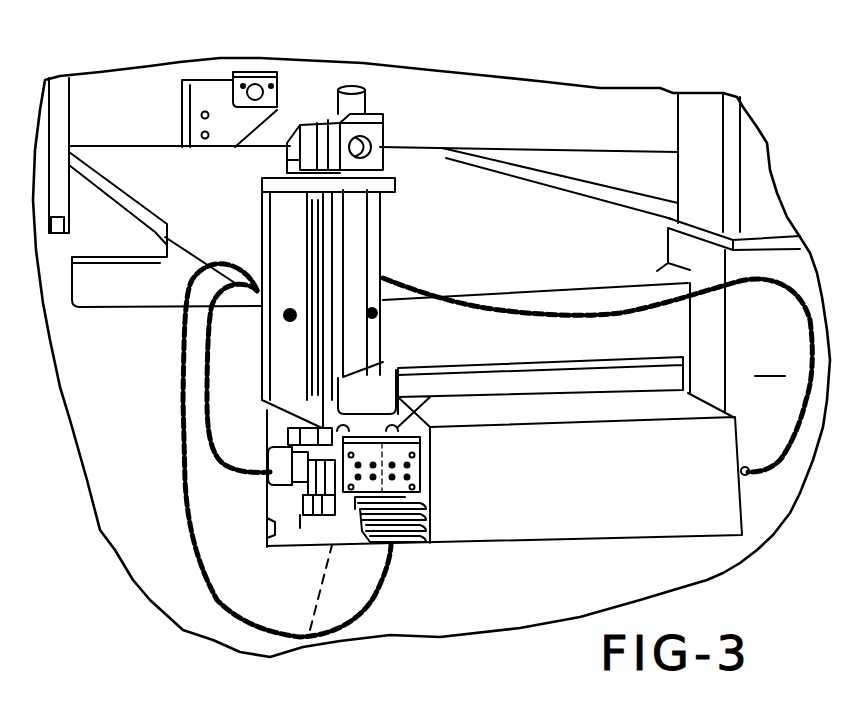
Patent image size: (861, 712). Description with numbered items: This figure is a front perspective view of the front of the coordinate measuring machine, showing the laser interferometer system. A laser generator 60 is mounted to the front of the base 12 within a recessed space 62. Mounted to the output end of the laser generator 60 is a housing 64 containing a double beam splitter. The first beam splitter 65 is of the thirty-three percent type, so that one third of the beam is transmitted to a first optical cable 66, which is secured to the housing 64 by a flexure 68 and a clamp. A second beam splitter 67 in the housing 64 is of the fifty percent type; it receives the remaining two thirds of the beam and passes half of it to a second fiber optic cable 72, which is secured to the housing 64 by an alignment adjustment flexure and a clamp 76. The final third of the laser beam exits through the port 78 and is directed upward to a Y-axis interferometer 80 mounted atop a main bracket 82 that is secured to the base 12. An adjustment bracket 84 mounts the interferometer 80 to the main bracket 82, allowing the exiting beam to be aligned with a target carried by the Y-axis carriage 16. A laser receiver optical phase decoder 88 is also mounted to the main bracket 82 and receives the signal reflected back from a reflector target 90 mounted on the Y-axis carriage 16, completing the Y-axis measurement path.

The base 12 is at (431, 357).
The Y-axis carriage 16 is at (347, 83).
The laser generator 60 is at (554, 545).
The recessed space 62 is at (265, 541).
The housing 64 is at (406, 438).
The first beam splitter 65 is at (422, 466).
The first optical cable 66 is at (183, 533).
The second beam splitter 67 is at (303, 640).
The flexure 68 is at (436, 513).
The second fiber optic cable 72 is at (268, 469).
The clamp 76 is at (271, 431).
The port 78 is at (300, 520).
The Y-axis interferometer 80 is at (382, 108).
The main bracket 82 is at (290, 228).
The adjustment bracket 84 is at (277, 77).
The laser receiver optical phase decoder 88 is at (323, 332).
The reflector target 90 is at (235, 116).